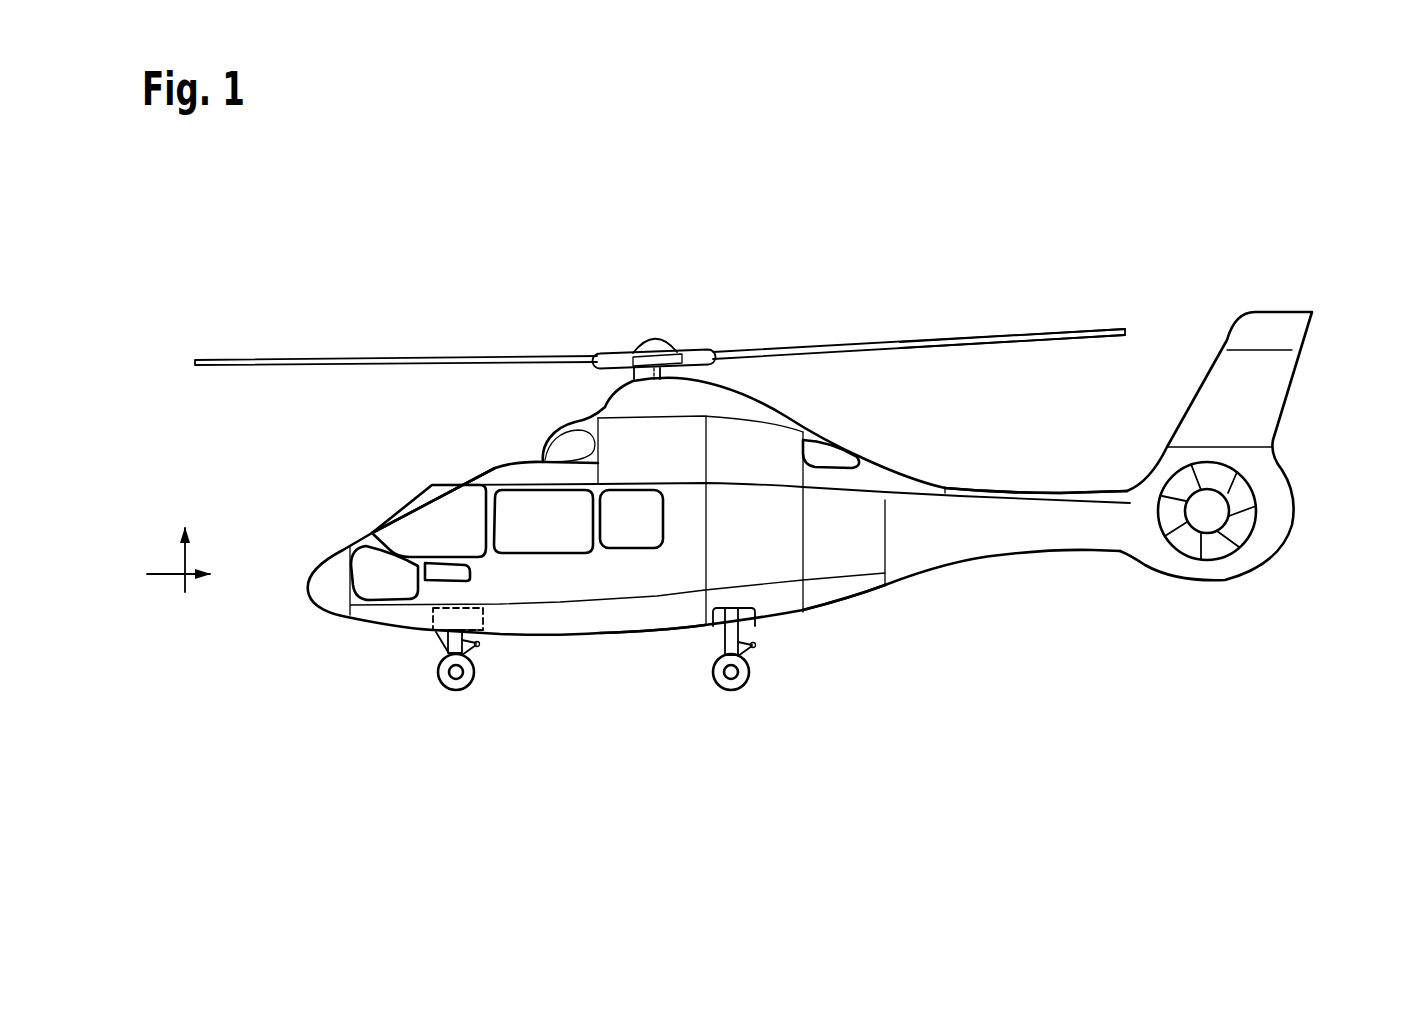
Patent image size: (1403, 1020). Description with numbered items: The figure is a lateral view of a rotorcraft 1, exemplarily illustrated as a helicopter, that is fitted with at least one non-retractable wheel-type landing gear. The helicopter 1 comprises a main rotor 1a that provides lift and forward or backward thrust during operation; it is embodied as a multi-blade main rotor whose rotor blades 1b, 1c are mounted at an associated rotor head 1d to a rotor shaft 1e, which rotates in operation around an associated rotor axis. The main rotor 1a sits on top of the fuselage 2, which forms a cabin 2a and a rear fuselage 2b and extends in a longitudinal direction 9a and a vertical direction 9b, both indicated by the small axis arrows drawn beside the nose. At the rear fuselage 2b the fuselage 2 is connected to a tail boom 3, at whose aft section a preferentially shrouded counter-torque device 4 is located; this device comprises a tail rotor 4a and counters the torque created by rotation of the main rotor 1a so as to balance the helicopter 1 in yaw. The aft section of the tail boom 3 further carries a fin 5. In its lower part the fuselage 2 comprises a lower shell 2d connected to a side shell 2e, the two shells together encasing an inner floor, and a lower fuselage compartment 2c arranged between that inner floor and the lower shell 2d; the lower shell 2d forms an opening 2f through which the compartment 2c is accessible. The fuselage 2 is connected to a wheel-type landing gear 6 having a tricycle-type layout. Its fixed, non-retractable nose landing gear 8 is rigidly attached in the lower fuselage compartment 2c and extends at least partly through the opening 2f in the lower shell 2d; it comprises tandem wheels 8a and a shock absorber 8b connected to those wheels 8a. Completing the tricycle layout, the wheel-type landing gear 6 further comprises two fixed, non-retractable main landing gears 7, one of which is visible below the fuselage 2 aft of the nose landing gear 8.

The rotorcraft 1 is at (368, 236).
The main rotor 1a is at (461, 350).
The rotor blade 1b is at (300, 360).
The rotor blade 1c is at (1098, 330).
The rotor head 1d is at (683, 337).
The rotor shaft 1e is at (634, 368).
The fuselage 2 is at (592, 575).
The cabin 2a is at (407, 515).
The rear fuselage 2b is at (888, 587).
The lower fuselage compartment 2c is at (441, 636).
The lower shell 2d is at (664, 640).
The side shell 2e is at (748, 548).
The opening 2f is at (443, 650).
The tail boom 3 is at (1030, 517).
The counter-torque device 4 is at (1263, 497).
The tail rotor 4a is at (1205, 538).
The fin 5 is at (1252, 355).
The wheel-type landing gear 6 is at (760, 668).
The main landing gear 7 is at (735, 700).
The nose landing gear 8 is at (458, 698).
The wheel 8a is at (443, 688).
The shock absorber 8b is at (478, 653).
The longitudinal direction 9a is at (163, 575).
The vertical direction 9b is at (184, 553).